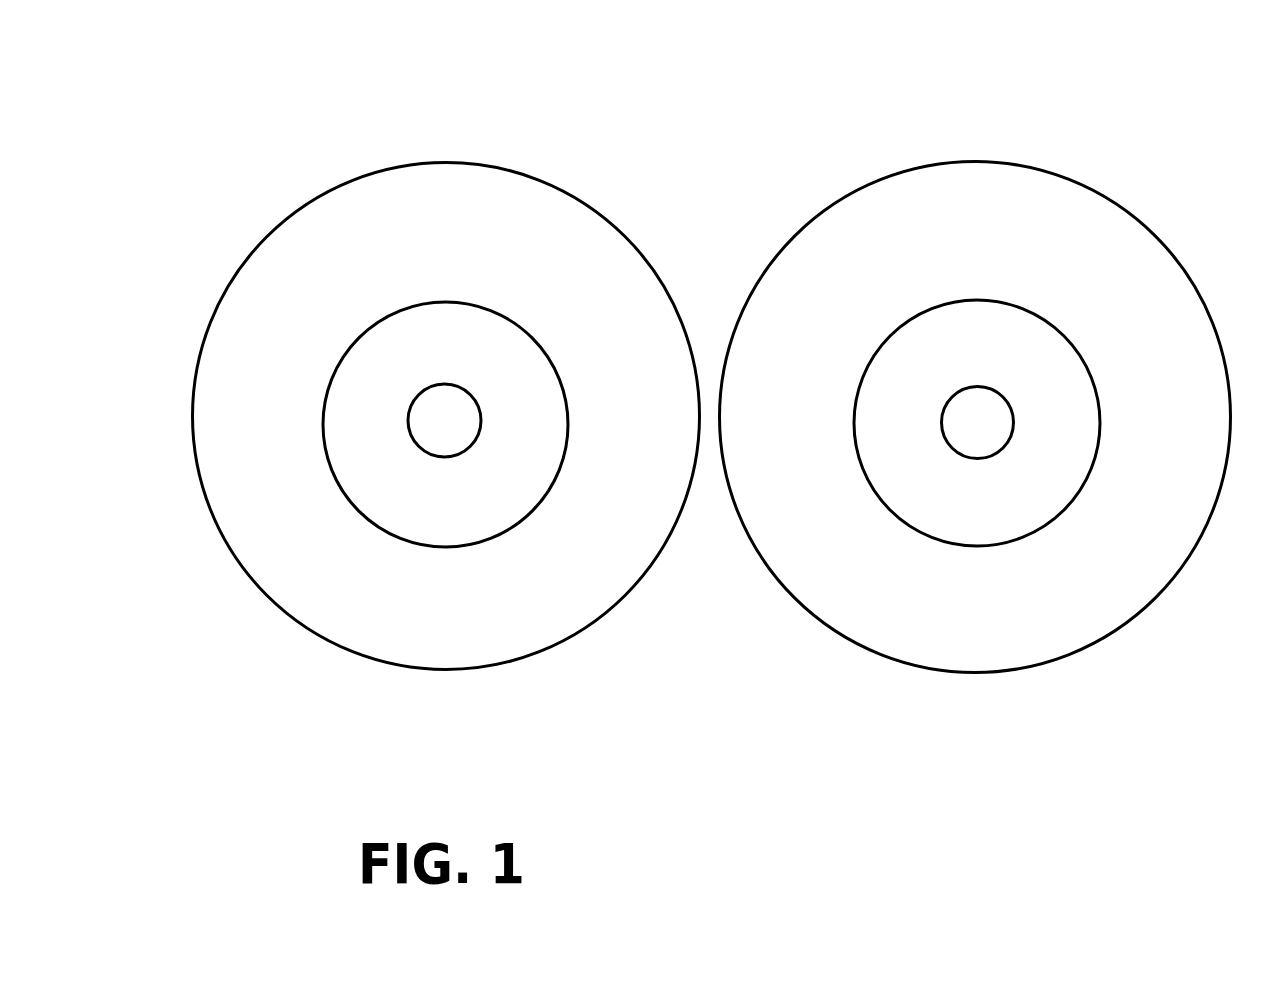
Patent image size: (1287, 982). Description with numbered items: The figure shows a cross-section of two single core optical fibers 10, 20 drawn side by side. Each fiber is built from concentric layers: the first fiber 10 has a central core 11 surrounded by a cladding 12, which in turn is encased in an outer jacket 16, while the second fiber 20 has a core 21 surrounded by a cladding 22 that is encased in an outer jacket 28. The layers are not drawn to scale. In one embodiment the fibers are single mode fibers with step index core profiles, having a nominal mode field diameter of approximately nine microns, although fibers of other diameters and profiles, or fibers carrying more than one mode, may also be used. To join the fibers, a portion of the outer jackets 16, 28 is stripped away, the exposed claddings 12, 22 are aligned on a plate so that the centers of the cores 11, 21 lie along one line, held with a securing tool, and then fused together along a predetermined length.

The single core fiber 10 is at (341, 142).
The core 11 is at (443, 405).
The cladding 12 is at (464, 505).
The outer jacket 16 is at (464, 641).
The single core fiber 20 is at (1070, 140).
The core 21 is at (980, 403).
The cladding 22 is at (995, 503).
The outer jacket 28 is at (996, 634).